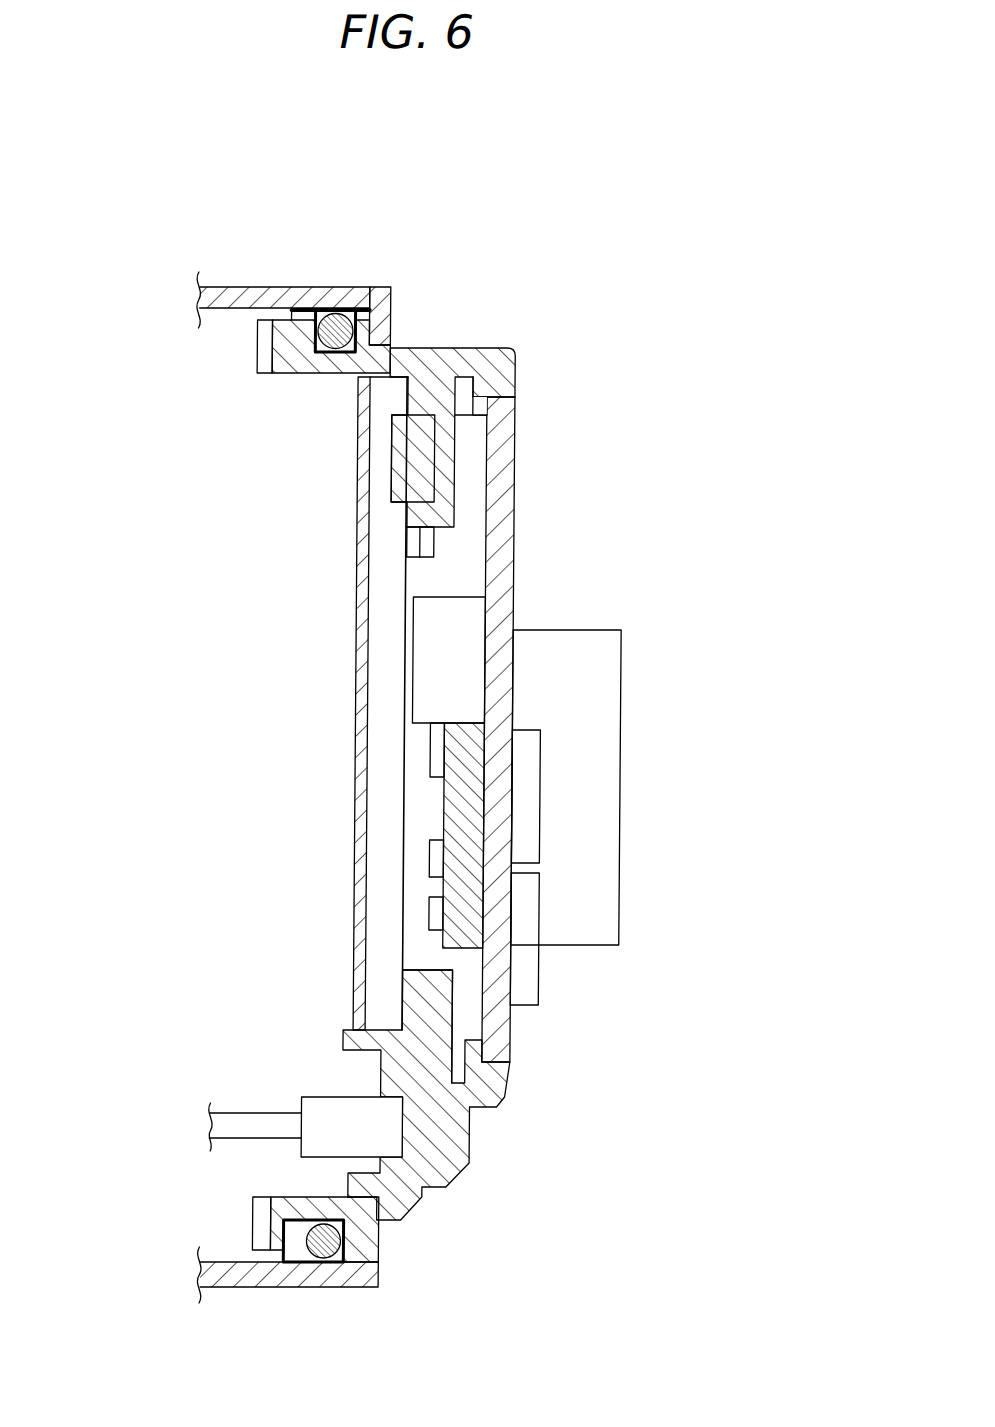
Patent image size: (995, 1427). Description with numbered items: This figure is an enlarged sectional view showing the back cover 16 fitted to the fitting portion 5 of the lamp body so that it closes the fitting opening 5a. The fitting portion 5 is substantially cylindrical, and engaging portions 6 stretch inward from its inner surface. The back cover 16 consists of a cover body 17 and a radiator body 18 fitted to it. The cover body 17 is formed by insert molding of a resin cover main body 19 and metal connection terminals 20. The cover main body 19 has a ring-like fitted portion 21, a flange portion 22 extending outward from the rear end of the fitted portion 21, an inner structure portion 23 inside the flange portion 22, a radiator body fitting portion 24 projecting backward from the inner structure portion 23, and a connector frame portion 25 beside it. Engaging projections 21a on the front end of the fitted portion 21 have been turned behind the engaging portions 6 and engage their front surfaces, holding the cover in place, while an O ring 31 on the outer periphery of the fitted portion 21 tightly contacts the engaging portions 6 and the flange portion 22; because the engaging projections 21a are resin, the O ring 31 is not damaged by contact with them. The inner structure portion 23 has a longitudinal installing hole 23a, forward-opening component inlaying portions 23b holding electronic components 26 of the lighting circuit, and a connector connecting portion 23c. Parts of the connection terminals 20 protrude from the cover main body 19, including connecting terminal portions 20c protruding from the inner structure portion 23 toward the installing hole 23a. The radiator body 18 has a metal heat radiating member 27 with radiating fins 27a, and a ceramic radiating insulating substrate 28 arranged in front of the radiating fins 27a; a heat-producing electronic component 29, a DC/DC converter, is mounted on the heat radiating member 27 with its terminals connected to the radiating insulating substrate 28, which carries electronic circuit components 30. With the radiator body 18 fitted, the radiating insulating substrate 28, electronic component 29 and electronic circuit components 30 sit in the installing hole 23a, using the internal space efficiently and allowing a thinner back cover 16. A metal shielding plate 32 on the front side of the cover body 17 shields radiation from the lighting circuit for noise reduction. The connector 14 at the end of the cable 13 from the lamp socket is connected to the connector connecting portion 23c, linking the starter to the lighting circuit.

The fitting portion 5 is at (284, 293).
The fitting opening 5a is at (391, 347).
The engaging portions 6 is at (313, 373).
The cable 13 is at (261, 1118).
The connector 14 is at (329, 1100).
The back cover 16 is at (708, 330).
The cover body 17 is at (519, 382).
The radiator body 18 is at (514, 476).
The cover main body 19 is at (452, 350).
The connection terminals 20 is at (414, 556).
The connecting terminal portions 20c is at (446, 812).
The fitted portion 21 is at (286, 375).
The engaging projections 21a is at (268, 332).
The flange portion 22 is at (388, 338).
The inner structure portion 23 is at (424, 537).
The installing hole 23a is at (413, 968).
The component inlaying portions 23b is at (418, 512).
The connector connecting portion 23c is at (404, 1132).
The radiator body fitting portion 24 is at (514, 1062).
The connector frame portion 25 is at (600, 862).
The electronic components 26 is at (407, 460).
The heat radiating member 27 is at (515, 517).
The radiating fins 27a is at (548, 780).
The radiating insulating substrate 28 is at (490, 826).
The electronic component 29 is at (472, 620).
The electronic circuit components 30 is at (446, 748).
The O ring 31 is at (331, 312).
The shielding plate 32 is at (364, 746).